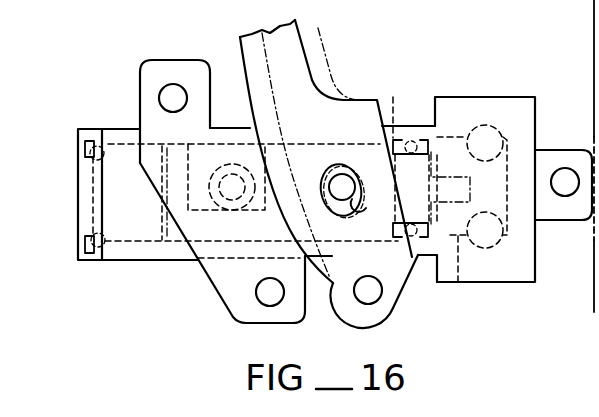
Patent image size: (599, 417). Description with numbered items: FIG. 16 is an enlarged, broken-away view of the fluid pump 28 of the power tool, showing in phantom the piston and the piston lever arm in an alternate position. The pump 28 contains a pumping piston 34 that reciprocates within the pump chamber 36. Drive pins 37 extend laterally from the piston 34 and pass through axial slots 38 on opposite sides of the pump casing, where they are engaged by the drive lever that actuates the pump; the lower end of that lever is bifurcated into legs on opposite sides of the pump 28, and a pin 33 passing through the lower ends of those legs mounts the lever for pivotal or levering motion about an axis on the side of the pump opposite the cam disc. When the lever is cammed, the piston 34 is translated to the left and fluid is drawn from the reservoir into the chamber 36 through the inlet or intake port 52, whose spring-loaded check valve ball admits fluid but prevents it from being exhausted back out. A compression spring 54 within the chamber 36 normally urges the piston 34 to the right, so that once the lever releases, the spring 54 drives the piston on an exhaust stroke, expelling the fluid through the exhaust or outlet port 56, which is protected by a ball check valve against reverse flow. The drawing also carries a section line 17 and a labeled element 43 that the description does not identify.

The section line 17- 17 is at (594, 80).
The fluid pump 28 is at (150, 44).
The pin 33 is at (372, 293).
The pumping piston 34 is at (425, 137).
The pump chamber 36 is at (460, 283).
The drive pins 37 is at (340, 190).
The axial slots 38 is at (362, 207).
The pivot bushing 43 is at (228, 195).
The inlet or intake port 52 is at (598, 24).
The compression spring 54 is at (102, 262).
The exhaust or outlet port 56 is at (484, 140).